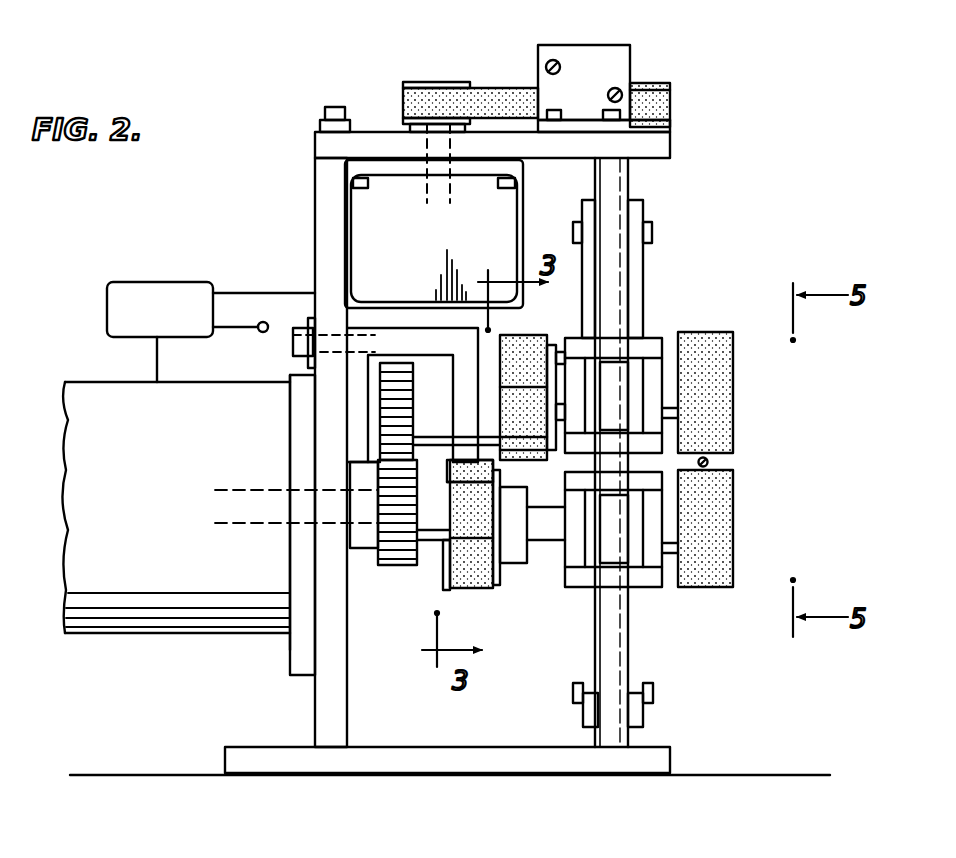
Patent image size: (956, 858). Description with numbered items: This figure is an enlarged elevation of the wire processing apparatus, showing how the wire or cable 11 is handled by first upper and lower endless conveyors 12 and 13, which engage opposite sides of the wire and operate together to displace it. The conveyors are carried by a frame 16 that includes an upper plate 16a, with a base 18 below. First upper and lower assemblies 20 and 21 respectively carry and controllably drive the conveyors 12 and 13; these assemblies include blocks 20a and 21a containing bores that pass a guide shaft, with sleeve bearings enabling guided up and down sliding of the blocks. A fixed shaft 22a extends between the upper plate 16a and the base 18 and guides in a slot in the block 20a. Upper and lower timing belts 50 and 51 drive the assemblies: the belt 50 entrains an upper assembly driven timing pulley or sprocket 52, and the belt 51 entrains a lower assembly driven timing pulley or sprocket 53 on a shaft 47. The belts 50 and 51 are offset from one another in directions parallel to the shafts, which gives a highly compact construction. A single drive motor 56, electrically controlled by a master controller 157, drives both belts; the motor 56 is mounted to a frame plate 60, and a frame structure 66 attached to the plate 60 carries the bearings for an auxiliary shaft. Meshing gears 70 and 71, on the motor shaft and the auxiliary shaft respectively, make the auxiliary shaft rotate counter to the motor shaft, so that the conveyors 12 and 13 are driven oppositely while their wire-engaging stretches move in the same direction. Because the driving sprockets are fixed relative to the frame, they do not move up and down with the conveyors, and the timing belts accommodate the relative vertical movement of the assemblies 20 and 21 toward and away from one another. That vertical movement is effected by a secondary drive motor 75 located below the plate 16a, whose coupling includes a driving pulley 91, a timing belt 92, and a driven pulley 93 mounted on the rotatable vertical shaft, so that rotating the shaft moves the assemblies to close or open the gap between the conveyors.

The wire or cable 11 is at (709, 462).
The first upper endless conveyor 12 is at (736, 407).
The first lower endless conveyor 13 is at (736, 547).
The frame 16 is at (298, 182).
The upper plate 16a is at (655, 141).
The base 18 is at (558, 762).
The first upper assembly 20 is at (668, 302).
The block 20a is at (648, 372).
The first lower assembly 21 is at (656, 616).
The block 21a is at (668, 582).
The fixed shaft 22a is at (612, 184).
The shaft 47 is at (548, 568).
The upper timing belt 50 is at (525, 355).
The lower timing belt 51 is at (456, 590).
The upper assembly driven timing pulley 52 is at (565, 412).
The lower assembly driven timing pulley 53 is at (512, 580).
The drive motor 56 is at (220, 512).
The frame plate 60 is at (330, 645).
The frame structure 66 is at (403, 330).
The gear 70 is at (390, 567).
The gear 71 is at (392, 402).
The motor 75 is at (434, 216).
The driving pulley 91 is at (420, 82).
The timing belt 92 is at (493, 88).
The driven pulley 93 is at (652, 83).
The master controller 157 is at (137, 282).